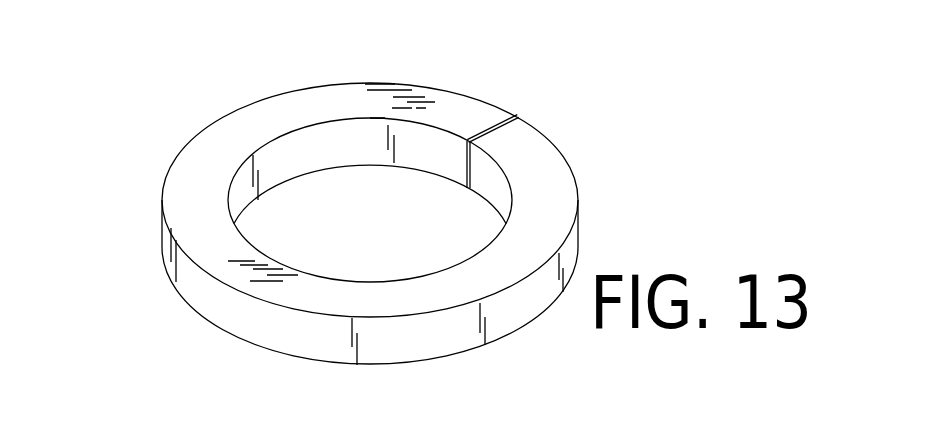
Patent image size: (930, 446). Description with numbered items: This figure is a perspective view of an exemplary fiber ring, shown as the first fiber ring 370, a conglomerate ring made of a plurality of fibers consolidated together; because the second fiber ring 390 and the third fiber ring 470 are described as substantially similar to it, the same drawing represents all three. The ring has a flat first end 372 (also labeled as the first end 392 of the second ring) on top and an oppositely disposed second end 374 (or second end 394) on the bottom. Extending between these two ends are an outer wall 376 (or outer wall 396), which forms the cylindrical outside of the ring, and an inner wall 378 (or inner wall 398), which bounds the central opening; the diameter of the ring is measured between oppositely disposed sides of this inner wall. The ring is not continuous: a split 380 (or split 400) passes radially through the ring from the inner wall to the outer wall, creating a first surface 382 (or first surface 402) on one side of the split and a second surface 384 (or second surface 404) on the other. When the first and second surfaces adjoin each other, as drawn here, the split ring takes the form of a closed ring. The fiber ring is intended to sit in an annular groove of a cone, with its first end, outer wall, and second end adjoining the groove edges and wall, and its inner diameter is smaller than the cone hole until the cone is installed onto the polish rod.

The first fiber ring 370 is at (435, 223).
The second fiber ring 390 is at (435, 223).
The third fiber ring 470 is at (435, 223).
The first end 372 is at (315, 196).
The first end 392 is at (243, 127).
The second end 374 is at (325, 327).
The second end 394 is at (245, 342).
The outer wall 376 is at (347, 321).
The outer wall 396 is at (347, 321).
The inner wall 378 is at (370, 200).
The inner wall 398 is at (307, 148).
The split 380 is at (551, 129).
The split 400 is at (551, 129).
The first surface 382 is at (564, 185).
The first surface 402 is at (516, 118).
The second surface 384 is at (465, 99).
The second surface 404 is at (465, 99).